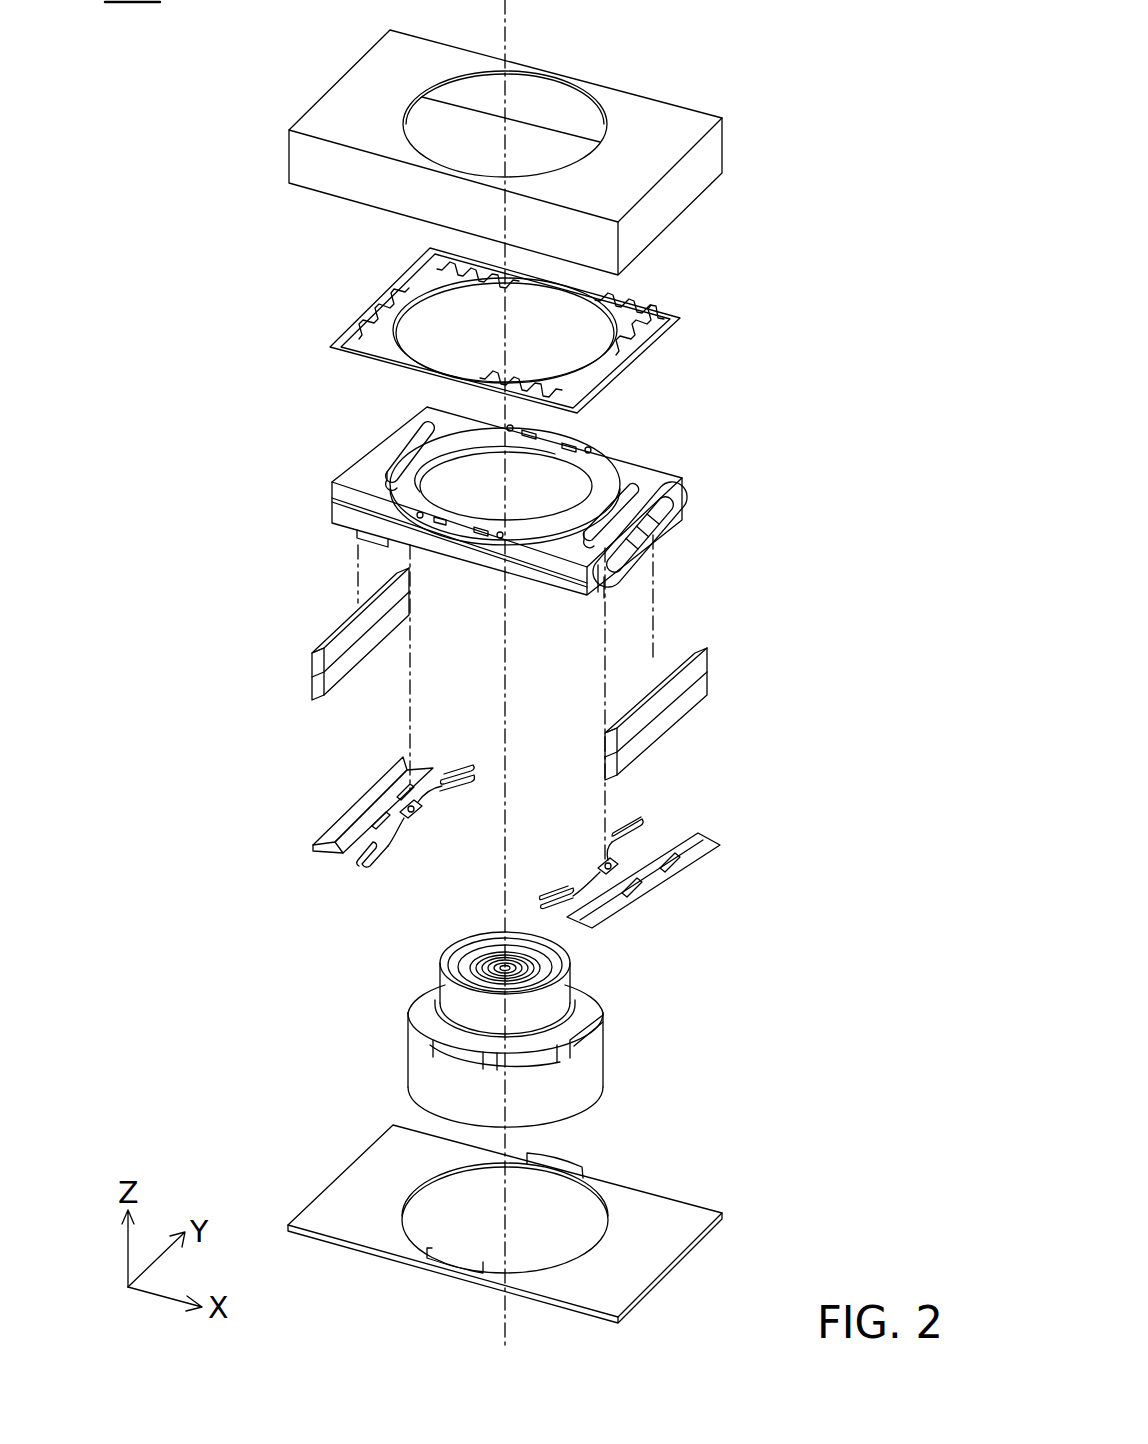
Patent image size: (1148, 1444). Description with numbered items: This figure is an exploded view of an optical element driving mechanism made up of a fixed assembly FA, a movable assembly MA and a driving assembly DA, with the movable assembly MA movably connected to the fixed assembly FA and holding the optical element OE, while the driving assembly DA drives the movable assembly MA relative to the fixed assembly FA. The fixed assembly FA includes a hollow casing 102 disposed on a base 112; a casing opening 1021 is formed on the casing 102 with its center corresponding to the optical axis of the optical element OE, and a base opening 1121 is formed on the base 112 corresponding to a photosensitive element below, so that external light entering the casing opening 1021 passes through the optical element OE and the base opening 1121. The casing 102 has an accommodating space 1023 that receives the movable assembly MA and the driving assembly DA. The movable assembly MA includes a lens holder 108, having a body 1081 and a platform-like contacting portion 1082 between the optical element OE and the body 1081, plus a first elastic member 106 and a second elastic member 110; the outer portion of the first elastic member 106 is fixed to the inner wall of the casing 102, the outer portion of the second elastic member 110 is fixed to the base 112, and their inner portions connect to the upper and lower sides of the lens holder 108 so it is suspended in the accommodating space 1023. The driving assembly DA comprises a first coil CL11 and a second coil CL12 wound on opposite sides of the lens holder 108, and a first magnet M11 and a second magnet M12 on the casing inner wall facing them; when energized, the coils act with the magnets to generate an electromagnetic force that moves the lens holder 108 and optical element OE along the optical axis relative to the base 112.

The casing 102 is at (537, 143).
The casing opening 1021 is at (577, 87).
The accommodating space 1023 is at (441, 142).
The first elastic member 106 is at (632, 368).
The lens holder 108 is at (545, 496).
The body 1081 is at (645, 472).
The contacting portion 1082 is at (445, 476).
The first coil CL11 is at (663, 538).
The second coil CL12 is at (385, 445).
The first magnet M11 is at (668, 722).
The second magnet M12 is at (355, 635).
The second elastic member 110 is at (355, 810).
The optical element OE is at (592, 1072).
The base 112 is at (499, 1178).
The base opening 1121 is at (422, 1177).
The fixed assembly FA is at (123, 215).
The movable assembly MA is at (123, 312).
The driving assembly DA is at (123, 453).